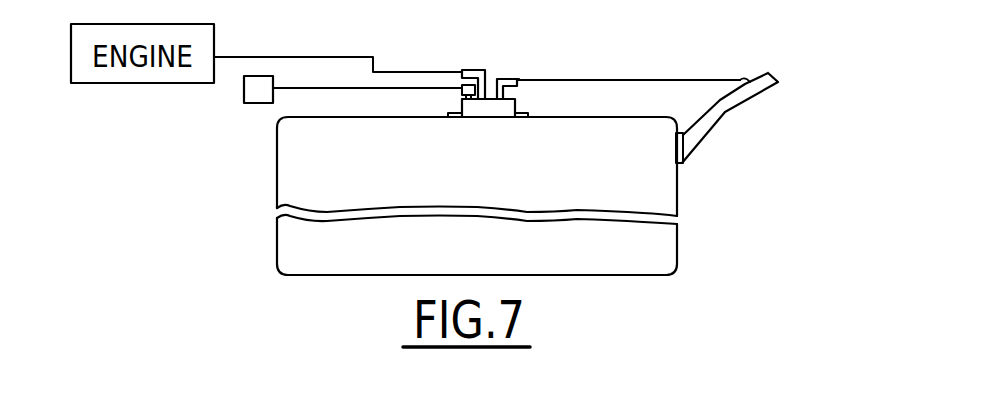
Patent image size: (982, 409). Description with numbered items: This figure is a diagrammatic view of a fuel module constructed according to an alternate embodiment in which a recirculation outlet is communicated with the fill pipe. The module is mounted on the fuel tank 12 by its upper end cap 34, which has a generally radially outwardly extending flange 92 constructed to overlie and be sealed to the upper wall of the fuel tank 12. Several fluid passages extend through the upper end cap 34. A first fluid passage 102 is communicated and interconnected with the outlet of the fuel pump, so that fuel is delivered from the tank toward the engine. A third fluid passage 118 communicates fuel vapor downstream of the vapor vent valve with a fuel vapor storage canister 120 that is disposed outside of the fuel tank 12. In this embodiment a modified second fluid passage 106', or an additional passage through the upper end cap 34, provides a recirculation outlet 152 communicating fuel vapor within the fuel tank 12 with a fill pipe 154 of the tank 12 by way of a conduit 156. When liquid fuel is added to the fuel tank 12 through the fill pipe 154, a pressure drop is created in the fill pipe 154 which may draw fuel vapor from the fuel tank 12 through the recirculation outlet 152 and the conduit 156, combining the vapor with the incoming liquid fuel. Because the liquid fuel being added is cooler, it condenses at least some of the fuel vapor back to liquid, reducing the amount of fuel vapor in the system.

The fuel tank 12 is at (668, 193).
The upper end cap 34 is at (493, 119).
The flange 92 is at (528, 113).
The first fluid passage 102 is at (466, 69).
The modified second fluid passage 106' is at (542, 53).
The third fluid passage 118 is at (462, 93).
The fuel vapor storage canister 120 is at (257, 103).
The recirculation outlet 152 is at (518, 80).
The fill pipe 154 is at (724, 113).
The conduit 156 is at (655, 80).